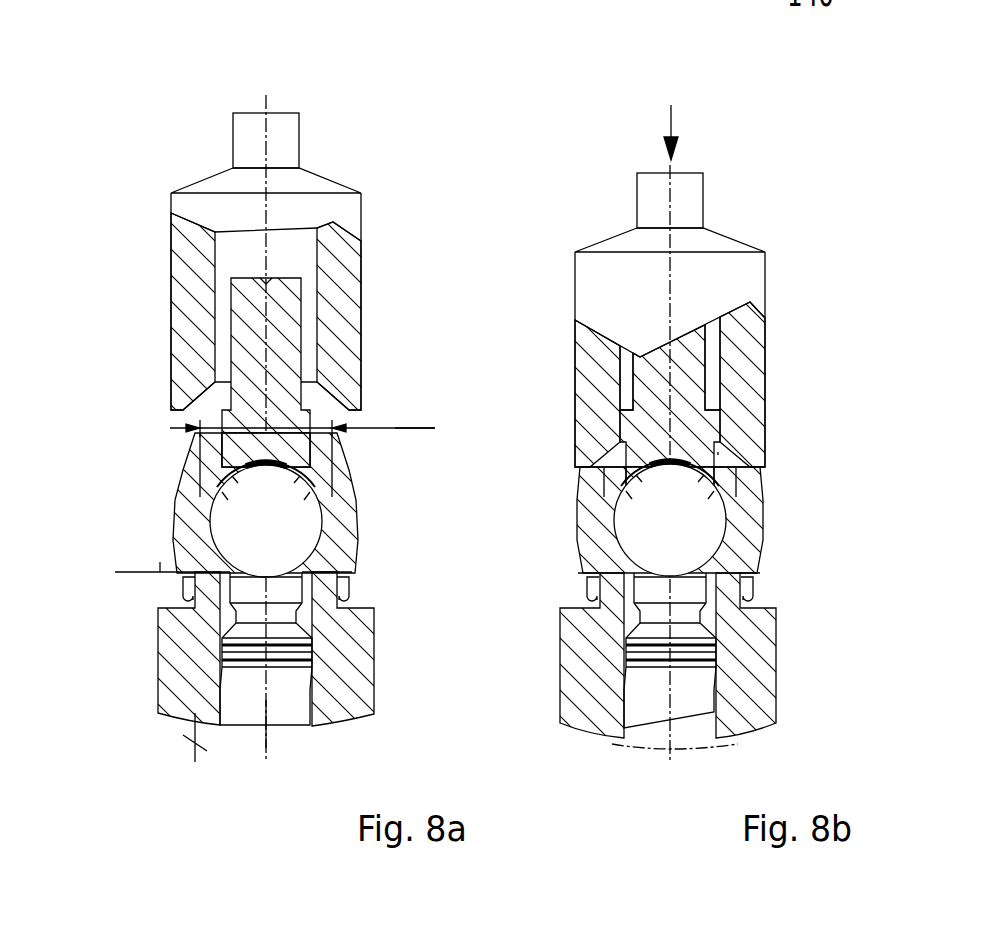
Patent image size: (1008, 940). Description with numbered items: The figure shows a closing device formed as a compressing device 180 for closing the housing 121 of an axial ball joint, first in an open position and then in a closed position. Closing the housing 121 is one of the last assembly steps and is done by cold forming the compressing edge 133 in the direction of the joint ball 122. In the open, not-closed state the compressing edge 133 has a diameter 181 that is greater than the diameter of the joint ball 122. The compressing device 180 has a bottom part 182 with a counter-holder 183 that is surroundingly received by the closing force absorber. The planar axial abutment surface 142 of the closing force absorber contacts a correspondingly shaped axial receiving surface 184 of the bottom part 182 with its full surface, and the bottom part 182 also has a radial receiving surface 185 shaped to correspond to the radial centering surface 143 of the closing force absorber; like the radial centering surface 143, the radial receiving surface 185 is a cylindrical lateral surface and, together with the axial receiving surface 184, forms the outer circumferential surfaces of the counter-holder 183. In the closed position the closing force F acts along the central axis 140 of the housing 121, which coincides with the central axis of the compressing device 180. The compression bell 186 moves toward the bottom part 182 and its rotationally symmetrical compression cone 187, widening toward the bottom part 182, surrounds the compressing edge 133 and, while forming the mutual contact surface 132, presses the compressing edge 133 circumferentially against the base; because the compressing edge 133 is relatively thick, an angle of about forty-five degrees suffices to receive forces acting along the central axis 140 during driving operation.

In FIG. 8A, the central axis 140 is at (270, 103).
In FIG. 8B, the central axis 140 is at (675, 170).
In FIG. 8A, the compressing device 180 is at (150, 242).
In FIG. 8B, the compressing device 180 is at (784, 224).
In FIG. 8B, the compression bell 186 is at (772, 272).
In FIG. 8B, the mutual contact surface 132 is at (712, 432).
In FIG. 8A, the compressing edge 133 is at (192, 450).
In FIG. 8B, the compressing edge 133 is at (718, 452).
In FIG. 8A, the joint ball 122 is at (228, 507).
In FIG. 8A, the housing 121 is at (362, 522).
In FIG. 8A, the diameter 181 is at (395, 428).
In FIG. 8A, the axial receiving surface 184 is at (159, 568).
In FIG. 8A, the planar axial abutment surface 142 is at (150, 575).
In FIG. 8A, the counter-holder 183 is at (352, 582).
In FIG. 8B, the counter-holder 183 is at (742, 582).
In FIG. 8A, the bottom part 182 is at (377, 658).
In FIG. 8B, the bottom part 182 is at (787, 656).
In FIG. 8A, the radial receiving surface 185 is at (195, 740).
In FIG. 8A, the radial centering surface 143 is at (195, 745).
In FIG. 8B, the compression cone 187 is at (773, 507).
In FIG. 8B, the closing force F is at (675, 123).